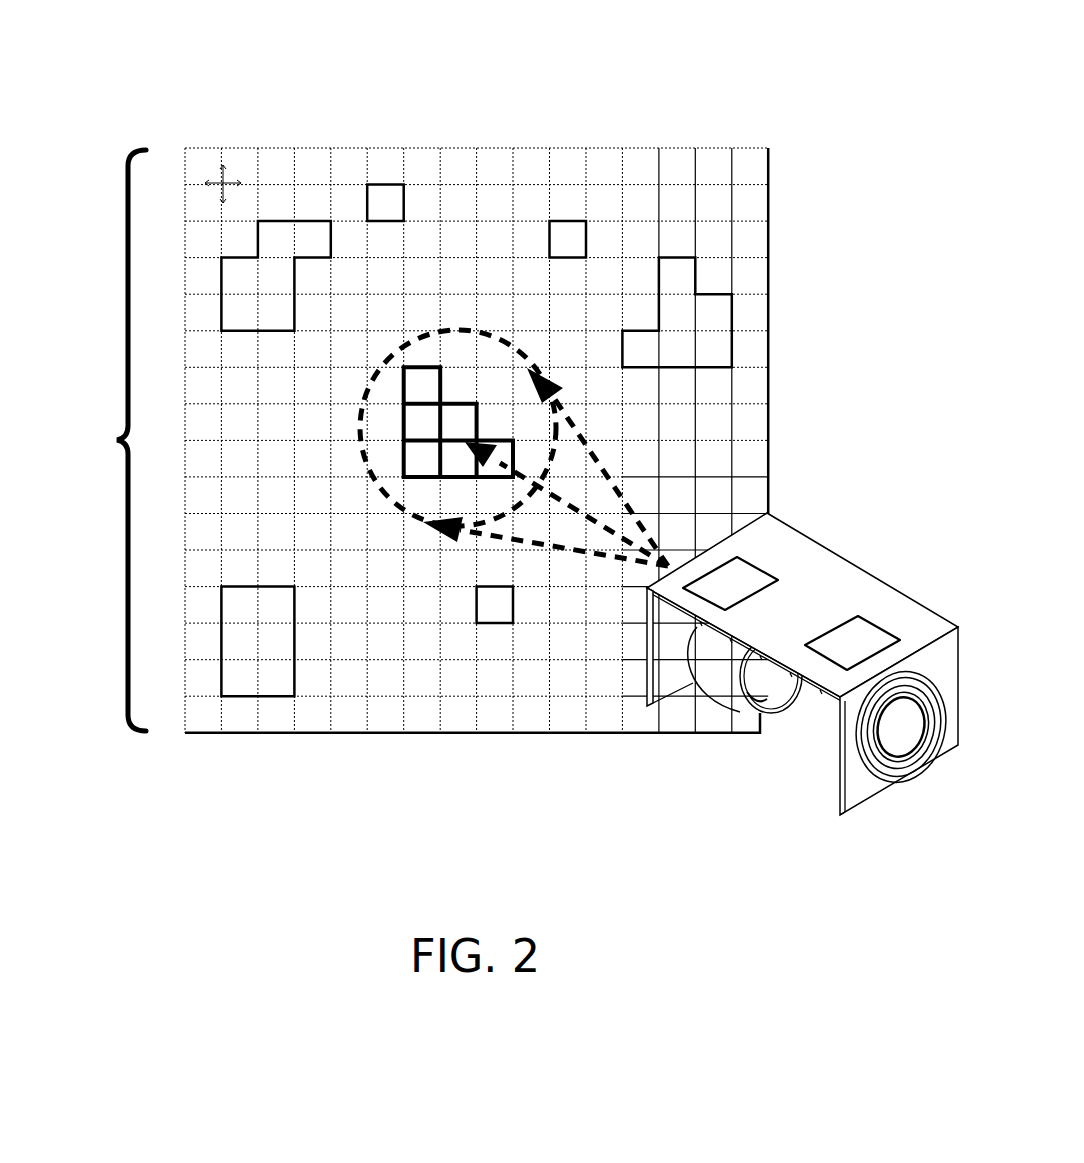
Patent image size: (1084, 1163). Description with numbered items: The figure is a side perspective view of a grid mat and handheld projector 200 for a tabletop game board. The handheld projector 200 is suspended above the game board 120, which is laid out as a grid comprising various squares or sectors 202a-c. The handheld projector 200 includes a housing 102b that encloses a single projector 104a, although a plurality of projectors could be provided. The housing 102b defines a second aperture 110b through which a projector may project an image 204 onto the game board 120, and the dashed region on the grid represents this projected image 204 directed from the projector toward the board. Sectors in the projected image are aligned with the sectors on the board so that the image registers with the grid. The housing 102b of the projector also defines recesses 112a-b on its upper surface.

The handheld projector 200 is at (500, 433).
The game board 120 is at (117, 438).
The squares or sectors 202a-c is at (360, 685).
The image 204 is at (520, 352).
The housing 102b is at (843, 602).
The projector 104a is at (720, 680).
The second aperture 110b is at (883, 738).
The recess 112a-b is at (840, 652).